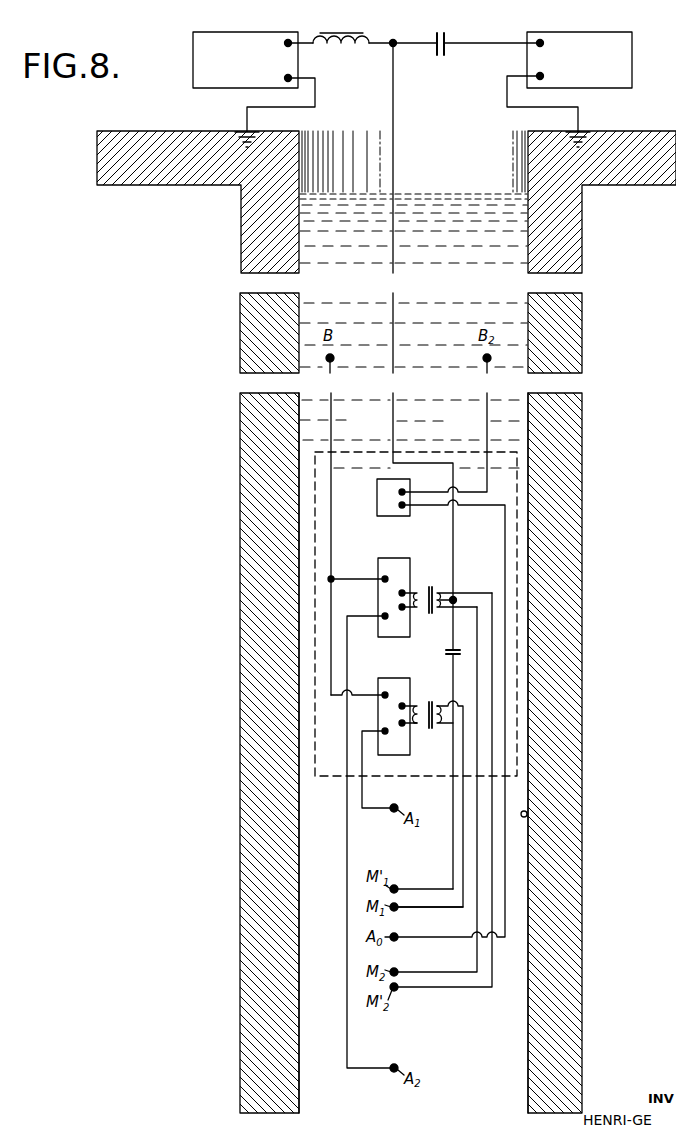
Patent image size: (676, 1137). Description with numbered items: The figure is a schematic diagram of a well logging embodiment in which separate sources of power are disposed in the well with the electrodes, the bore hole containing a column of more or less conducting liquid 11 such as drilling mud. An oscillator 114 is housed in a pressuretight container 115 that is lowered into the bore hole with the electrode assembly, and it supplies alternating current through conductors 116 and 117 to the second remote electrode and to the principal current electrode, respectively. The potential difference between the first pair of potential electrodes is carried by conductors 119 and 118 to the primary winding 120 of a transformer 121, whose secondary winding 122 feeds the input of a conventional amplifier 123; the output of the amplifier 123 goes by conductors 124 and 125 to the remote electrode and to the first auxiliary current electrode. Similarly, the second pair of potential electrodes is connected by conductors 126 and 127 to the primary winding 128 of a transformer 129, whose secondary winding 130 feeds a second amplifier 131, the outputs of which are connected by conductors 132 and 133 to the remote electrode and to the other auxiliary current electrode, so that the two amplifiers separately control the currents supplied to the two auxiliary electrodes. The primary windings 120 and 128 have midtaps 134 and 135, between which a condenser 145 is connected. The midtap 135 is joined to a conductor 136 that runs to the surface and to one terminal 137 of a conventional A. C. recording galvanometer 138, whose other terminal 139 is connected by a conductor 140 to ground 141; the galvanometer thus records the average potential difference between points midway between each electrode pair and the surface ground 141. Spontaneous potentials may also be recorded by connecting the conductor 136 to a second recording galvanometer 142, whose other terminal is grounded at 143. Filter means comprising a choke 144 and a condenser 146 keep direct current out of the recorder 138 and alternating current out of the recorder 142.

The conducting liquid 11 is at (419, 196).
The oscillator 114 is at (383, 495).
The pressuretight container 115 is at (363, 452).
The conductor 116 is at (487, 418).
The conductor 117 is at (505, 529).
The conductor 118 is at (413, 887).
The conductor 119 is at (448, 909).
The primary winding 120 is at (450, 748).
The transformer 121 is at (422, 731).
The secondary winding 122 is at (418, 705).
The amplifier 123 is at (408, 682).
The conductor 124 is at (362, 692).
The conductor 125 is at (377, 812).
The conductor 126 is at (437, 971).
The conductor 127 is at (443, 990).
The primary winding 128 is at (434, 588).
The transformer 129 is at (422, 617).
The secondary winding 130 is at (415, 588).
The second amplifier 131 is at (386, 560).
The conductor 132 is at (352, 578).
The conductor 133 is at (347, 878).
The midtap 134 is at (456, 706).
The midtap 135 is at (454, 598).
The conductor 136 is at (451, 541).
The terminal 137 is at (540, 42).
The A. C. recording galvanometer 138 is at (579, 60).
The terminal 139 is at (539, 75).
The conductor 140 is at (507, 96).
The ground 141 is at (587, 131).
The second recording galvanometer 142 is at (245, 60).
The ground 143 is at (245, 130).
The choke 144 is at (341, 56).
The condenser 145 is at (460, 652).
The condenser 146 is at (437, 56).